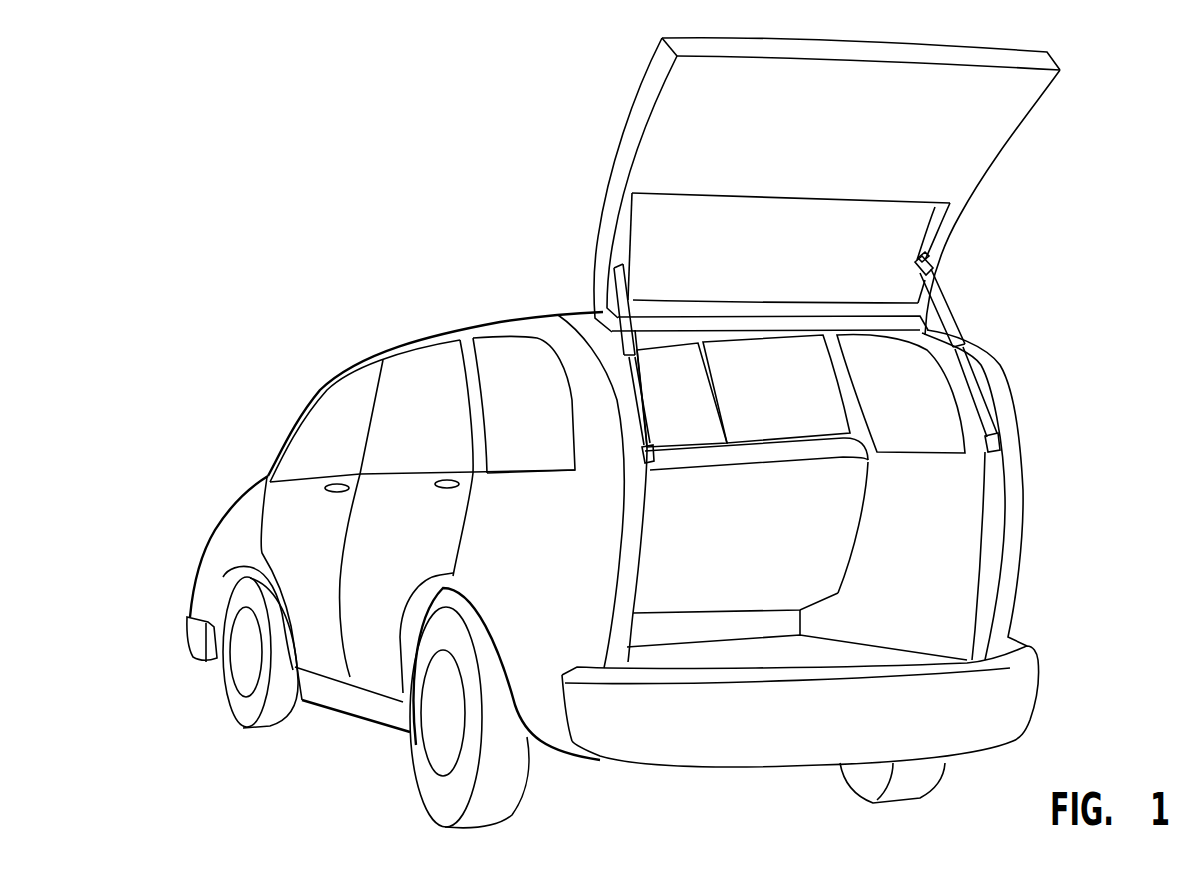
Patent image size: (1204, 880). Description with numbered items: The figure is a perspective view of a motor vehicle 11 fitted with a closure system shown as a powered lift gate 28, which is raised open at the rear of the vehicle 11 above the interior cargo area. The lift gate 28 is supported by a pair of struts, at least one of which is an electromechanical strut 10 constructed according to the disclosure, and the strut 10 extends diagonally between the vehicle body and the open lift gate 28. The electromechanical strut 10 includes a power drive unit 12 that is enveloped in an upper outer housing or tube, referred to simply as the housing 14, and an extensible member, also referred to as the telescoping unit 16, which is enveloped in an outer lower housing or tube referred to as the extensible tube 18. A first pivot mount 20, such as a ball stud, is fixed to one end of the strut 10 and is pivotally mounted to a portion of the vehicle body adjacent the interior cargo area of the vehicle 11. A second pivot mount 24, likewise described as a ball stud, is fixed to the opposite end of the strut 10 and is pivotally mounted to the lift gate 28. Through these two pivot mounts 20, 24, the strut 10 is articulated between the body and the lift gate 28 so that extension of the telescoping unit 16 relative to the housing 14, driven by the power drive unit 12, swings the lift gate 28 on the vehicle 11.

The electromechanical strut 10 is at (798, 358).
The motor vehicle 11 is at (326, 338).
The power drive unit 12 is at (982, 413).
The housing 14 is at (970, 379).
The telescoping unit 16 is at (945, 316).
The extensible tube 18 is at (932, 271).
The first pivot mount 20 is at (990, 444).
The second pivot mount 24 is at (938, 268).
The lift gate 28 is at (988, 105).